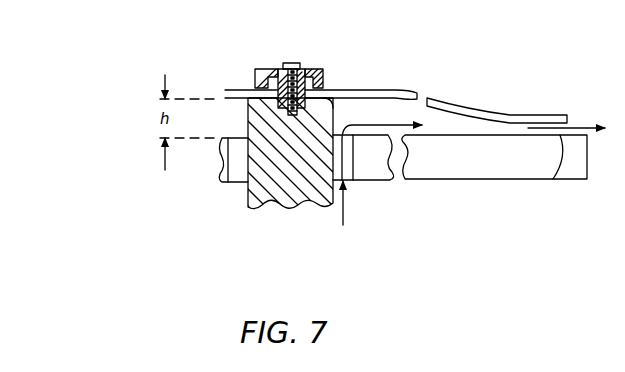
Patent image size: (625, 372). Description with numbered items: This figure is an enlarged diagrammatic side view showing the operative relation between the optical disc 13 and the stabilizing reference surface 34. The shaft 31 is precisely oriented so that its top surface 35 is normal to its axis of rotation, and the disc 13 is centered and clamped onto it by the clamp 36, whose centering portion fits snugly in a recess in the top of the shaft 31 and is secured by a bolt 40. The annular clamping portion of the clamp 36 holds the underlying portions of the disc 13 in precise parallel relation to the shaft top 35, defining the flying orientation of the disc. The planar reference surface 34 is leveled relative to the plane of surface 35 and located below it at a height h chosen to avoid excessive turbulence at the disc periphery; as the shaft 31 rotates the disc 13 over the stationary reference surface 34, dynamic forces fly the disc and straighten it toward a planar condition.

The disc 13 is at (386, 88).
The shaft 31 is at (260, 187).
The reference surface 34 is at (372, 182).
The shaft top surface 35 is at (336, 104).
The clamp 36 is at (262, 69).
The bolt 40 is at (298, 63).